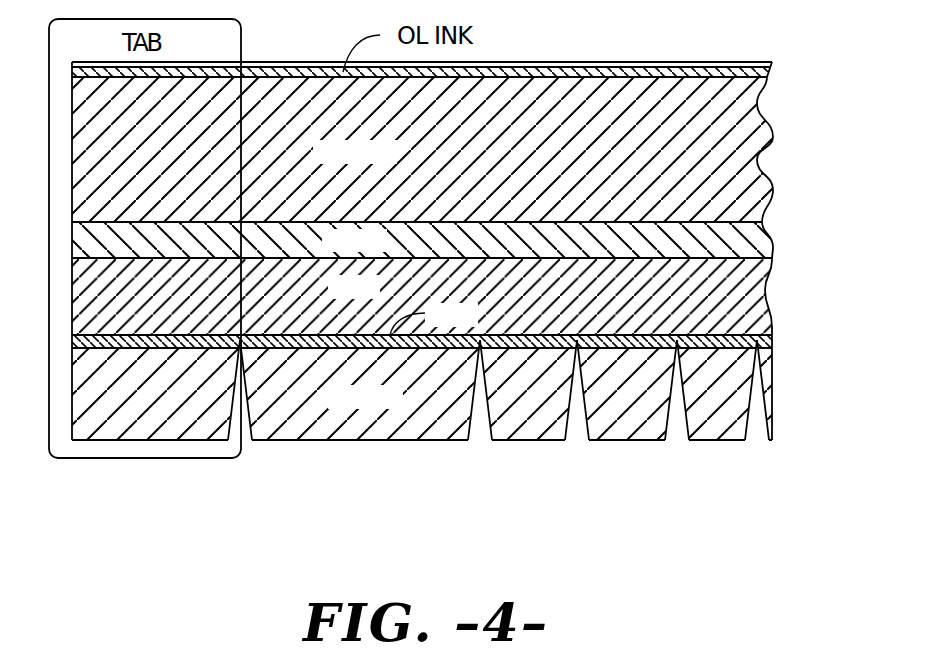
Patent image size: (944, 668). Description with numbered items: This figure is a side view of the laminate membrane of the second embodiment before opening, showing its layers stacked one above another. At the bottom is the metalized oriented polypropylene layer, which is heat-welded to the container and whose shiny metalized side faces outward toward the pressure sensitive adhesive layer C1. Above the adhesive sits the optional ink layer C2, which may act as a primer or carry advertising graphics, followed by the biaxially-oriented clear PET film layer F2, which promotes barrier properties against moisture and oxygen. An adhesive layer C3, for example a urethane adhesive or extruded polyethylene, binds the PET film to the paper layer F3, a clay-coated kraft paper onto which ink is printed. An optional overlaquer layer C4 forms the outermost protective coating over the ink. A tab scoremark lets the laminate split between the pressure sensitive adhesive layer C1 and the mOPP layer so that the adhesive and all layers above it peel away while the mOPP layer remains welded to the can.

The overlaquer layer C4 is at (627, 63).
The paper layer F3 is at (772, 135).
The adhesive layer C3 is at (772, 242).
The PET film layer F2 is at (770, 298).
The ink layer C2 is at (773, 343).
The pressure sensitive adhesive layer C1 is at (423, 427).